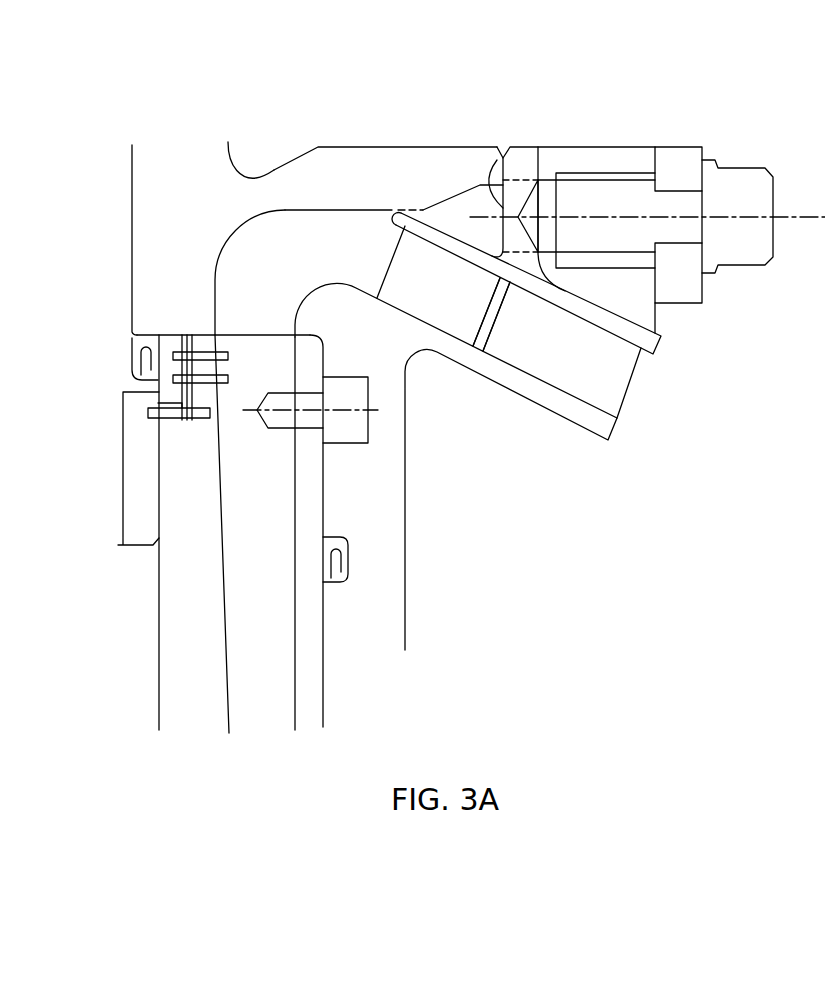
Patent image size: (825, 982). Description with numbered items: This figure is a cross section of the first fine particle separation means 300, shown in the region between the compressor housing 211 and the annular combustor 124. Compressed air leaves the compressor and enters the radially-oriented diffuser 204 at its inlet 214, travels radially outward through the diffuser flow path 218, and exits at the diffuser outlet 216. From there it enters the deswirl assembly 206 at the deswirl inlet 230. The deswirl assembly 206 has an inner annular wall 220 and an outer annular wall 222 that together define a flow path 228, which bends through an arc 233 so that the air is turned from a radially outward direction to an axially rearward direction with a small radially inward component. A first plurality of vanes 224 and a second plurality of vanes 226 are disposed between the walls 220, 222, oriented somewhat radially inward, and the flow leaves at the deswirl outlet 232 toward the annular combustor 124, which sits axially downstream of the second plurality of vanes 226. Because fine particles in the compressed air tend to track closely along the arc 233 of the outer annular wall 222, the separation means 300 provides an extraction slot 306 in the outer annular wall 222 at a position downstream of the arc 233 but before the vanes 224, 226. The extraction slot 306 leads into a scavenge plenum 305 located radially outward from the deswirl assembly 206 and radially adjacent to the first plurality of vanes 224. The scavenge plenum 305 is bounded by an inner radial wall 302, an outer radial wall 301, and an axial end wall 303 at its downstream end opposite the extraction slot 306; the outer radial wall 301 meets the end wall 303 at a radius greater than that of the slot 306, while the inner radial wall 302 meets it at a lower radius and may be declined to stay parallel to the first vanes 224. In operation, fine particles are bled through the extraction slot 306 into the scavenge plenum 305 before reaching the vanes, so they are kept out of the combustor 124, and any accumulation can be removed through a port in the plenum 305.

The first fine particle separation means 300 is at (714, 188).
The deswirl assembly 206 is at (385, 129).
The compressor housing 211 is at (203, 222).
The arc 233 is at (344, 169).
The outer radial wall 301 is at (472, 187).
The axial end wall 303 is at (486, 187).
The inner radial wall 302 is at (440, 227).
The extraction slot 306 is at (398, 217).
The scavenge plenum 305 is at (641, 220).
The flow path 228 is at (399, 424).
The outer annular wall 222 is at (241, 243).
The outlet 216 is at (227, 339).
The inlet 230 is at (265, 336).
The inner annular wall 220 is at (333, 285).
The first plurality of vanes 224 is at (438, 286).
The second plurality of vanes 226 is at (562, 350).
The outlet 232 is at (516, 308).
The flow path 218 is at (294, 532).
The diffuser 204 is at (163, 476).
The inlet 214 is at (202, 560).
The annular combustor 124 is at (757, 554).